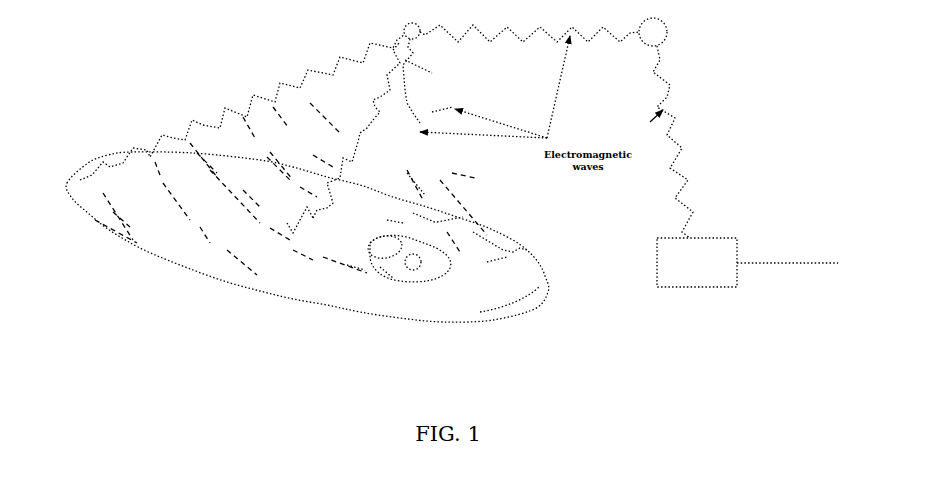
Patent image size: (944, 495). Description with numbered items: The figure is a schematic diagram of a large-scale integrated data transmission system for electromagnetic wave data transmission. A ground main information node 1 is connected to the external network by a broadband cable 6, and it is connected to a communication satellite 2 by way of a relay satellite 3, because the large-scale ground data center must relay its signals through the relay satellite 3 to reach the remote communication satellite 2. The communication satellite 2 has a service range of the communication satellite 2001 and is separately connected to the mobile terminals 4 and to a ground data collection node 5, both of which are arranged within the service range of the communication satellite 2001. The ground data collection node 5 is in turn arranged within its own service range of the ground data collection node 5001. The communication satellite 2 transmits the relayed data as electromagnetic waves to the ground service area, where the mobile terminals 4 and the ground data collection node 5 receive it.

The ground main information node 1 is at (731, 236).
The communication satellite 2 is at (403, 31).
The relay satellite 3 is at (673, 39).
The mobile terminal 4 is at (98, 180).
The ground data collection node 5 is at (426, 254).
The broadband cable 6 is at (791, 259).
The service range of the communication satellite 2001 is at (428, 203).
The service range of the ground data collection node 5001 is at (459, 267).